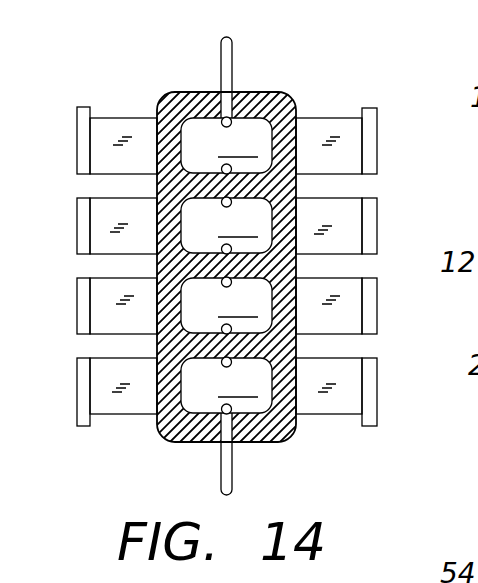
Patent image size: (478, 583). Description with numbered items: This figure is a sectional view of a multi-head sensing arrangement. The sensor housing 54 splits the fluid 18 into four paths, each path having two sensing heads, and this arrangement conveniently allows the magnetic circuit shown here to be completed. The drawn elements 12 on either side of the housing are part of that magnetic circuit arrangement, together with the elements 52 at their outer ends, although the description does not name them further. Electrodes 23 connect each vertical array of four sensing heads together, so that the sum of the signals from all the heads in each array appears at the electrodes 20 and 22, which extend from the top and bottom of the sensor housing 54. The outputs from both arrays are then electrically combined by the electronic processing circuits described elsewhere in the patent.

The magnet 12 is at (122, 117).
The fluid 18 is at (226, 265).
The electrode 20 is at (233, 68).
The electrode 22 is at (222, 462).
The electrodes 23 is at (222, 170).
The pole plate 52 is at (377, 153).
The sensor housing 54 is at (283, 444).